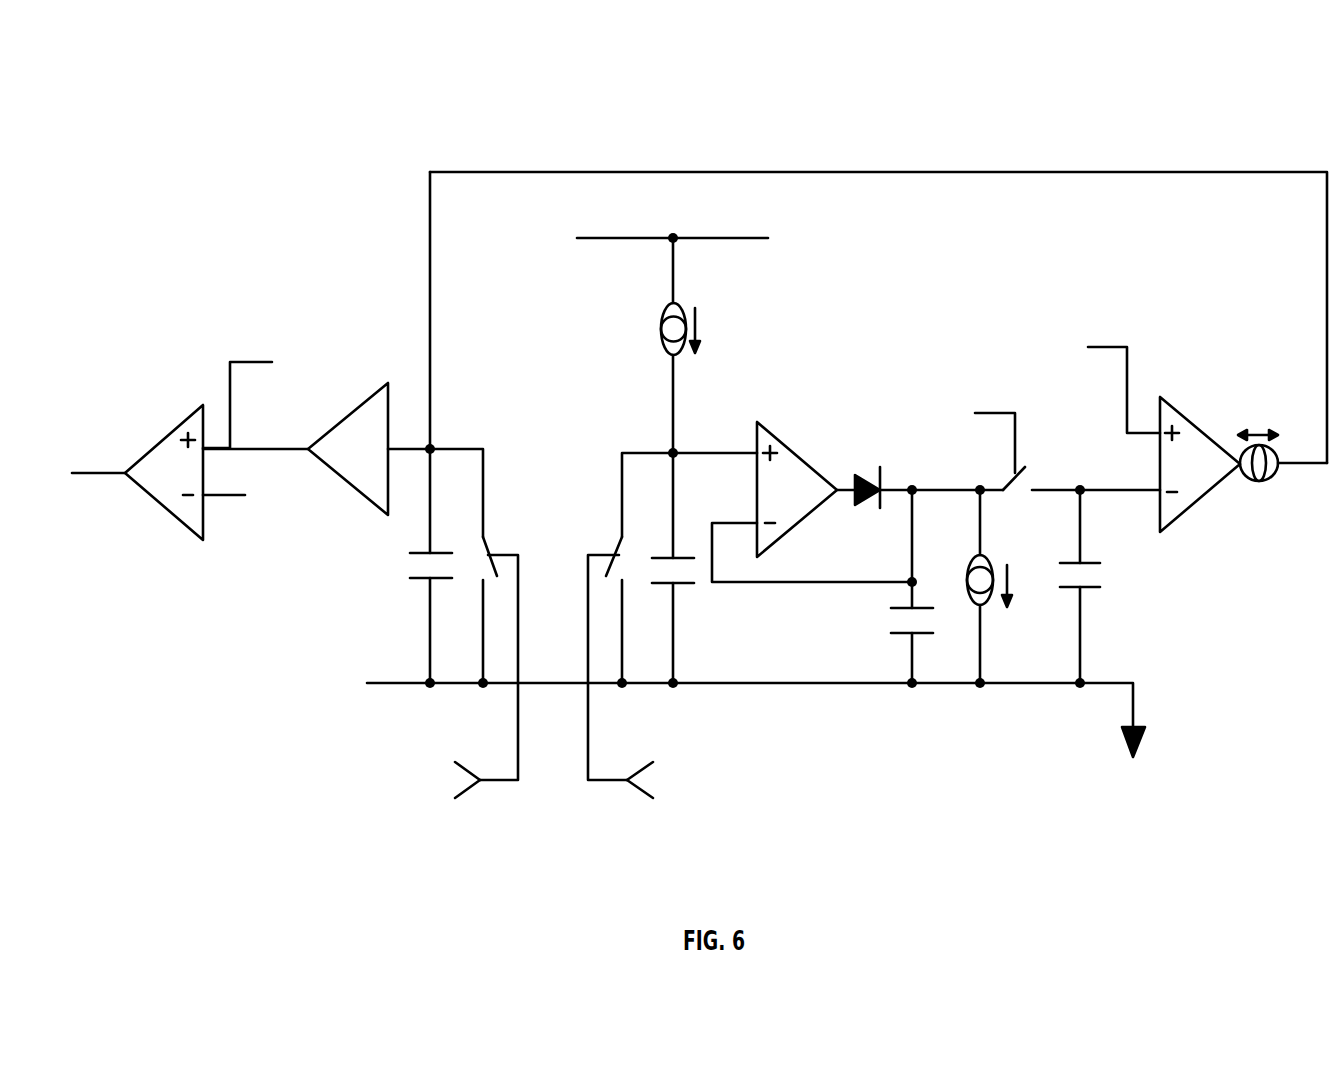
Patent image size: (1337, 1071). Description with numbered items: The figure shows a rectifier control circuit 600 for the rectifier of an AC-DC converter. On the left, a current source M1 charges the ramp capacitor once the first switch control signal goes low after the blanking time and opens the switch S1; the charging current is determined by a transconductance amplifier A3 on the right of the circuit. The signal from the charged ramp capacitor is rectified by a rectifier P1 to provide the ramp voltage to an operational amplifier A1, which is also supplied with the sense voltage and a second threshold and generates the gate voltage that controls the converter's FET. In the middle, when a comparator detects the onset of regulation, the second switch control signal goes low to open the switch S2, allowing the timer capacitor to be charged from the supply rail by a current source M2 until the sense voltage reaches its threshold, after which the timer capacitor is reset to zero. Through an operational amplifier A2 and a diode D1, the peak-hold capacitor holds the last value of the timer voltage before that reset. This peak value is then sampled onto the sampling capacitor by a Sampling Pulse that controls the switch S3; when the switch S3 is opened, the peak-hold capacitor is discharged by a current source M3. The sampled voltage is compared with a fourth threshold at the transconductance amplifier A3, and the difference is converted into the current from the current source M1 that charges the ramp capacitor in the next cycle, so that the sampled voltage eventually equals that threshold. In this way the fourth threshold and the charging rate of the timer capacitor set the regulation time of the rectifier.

The rectifier control circuit 600 is at (696, 50).
The operational amplifier A1 is at (172, 451).
The rectifier P1 is at (316, 449).
The switch S1 is at (474, 623).
The switch S2 is at (629, 625).
The switch S3 is at (1027, 469).
The current source M2 is at (705, 345).
The current source M3 is at (1007, 586).
The current source M1 is at (1282, 441).
The operational amplifier A2 is at (792, 502).
The transconductance amplifier A3 is at (1164, 439).
The diode D1 is at (874, 478).